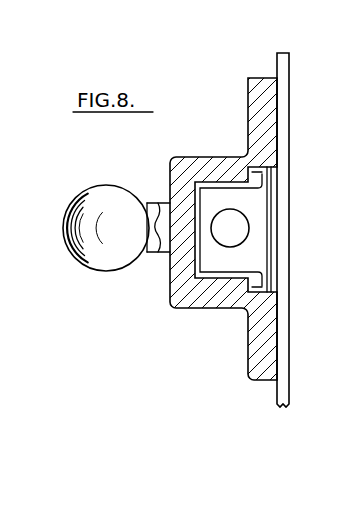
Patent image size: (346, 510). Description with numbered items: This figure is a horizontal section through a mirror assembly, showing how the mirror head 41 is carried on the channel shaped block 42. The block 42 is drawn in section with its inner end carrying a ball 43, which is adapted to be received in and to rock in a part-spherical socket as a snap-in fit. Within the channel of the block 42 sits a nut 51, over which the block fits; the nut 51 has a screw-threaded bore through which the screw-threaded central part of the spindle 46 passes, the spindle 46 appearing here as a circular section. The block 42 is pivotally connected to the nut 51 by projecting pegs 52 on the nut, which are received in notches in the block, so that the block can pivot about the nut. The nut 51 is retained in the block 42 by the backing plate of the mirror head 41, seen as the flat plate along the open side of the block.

The mirror head 41 is at (282, 112).
The channel shaped block 42 is at (222, 157).
The ball 43 is at (108, 258).
The spindle 46 is at (237, 224).
The nut 51 is at (257, 213).
The projecting pegs 52 is at (262, 175).